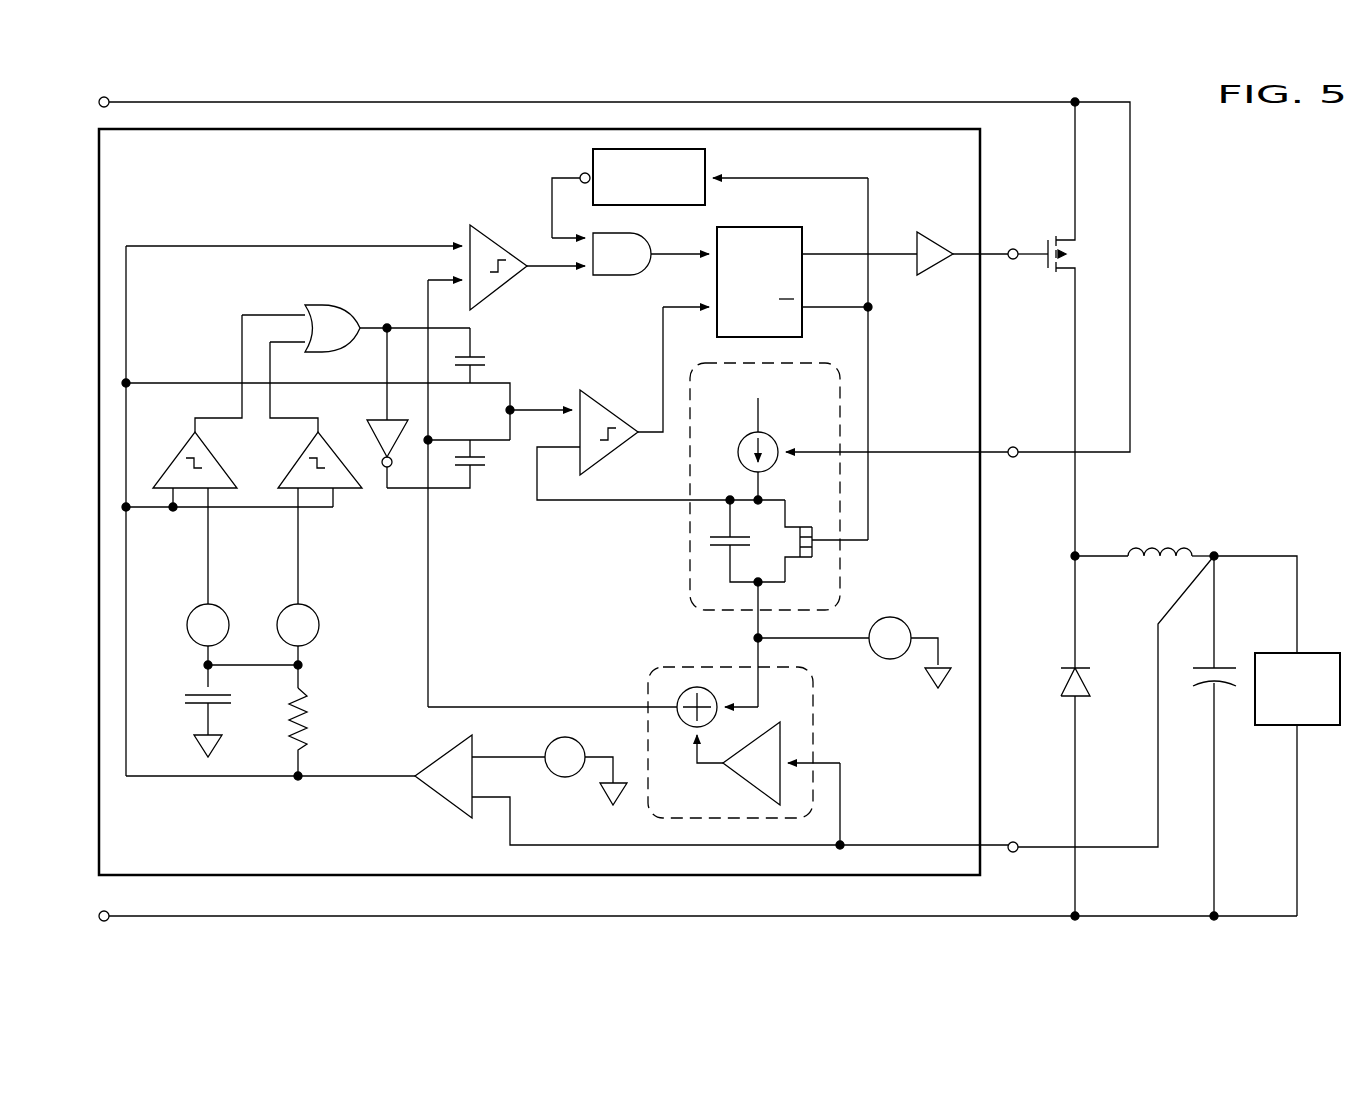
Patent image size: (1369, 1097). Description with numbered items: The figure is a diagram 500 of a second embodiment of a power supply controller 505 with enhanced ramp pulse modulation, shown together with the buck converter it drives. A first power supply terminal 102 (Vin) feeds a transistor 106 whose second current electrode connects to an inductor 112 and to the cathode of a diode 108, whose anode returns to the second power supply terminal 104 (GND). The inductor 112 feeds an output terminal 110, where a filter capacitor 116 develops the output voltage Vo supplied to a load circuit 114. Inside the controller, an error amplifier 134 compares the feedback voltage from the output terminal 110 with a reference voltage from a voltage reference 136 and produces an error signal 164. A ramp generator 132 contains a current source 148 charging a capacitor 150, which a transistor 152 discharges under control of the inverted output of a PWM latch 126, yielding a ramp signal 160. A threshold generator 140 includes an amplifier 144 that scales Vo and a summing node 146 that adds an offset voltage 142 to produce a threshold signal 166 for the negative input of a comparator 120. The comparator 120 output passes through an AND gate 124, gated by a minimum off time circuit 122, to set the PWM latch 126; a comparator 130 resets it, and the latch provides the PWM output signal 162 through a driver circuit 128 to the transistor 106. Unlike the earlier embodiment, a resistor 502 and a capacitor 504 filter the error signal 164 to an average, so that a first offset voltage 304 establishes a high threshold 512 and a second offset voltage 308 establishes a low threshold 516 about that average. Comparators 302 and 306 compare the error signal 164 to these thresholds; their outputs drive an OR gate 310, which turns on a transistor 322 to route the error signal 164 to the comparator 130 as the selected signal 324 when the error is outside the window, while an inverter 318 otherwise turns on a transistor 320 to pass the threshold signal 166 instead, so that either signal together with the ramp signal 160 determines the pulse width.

The first power supply terminal 102 is at (210, 100).
The second power supply terminal 104 is at (212, 913).
The transistor 106 is at (1066, 248).
The diode 108 is at (1078, 666).
The output terminal 110 is at (1262, 552).
The inductor 112 is at (1150, 534).
The load circuit 114 is at (1322, 653).
The filter capacitor 116 is at (1196, 662).
The comparator 120 is at (498, 238).
The minimum off time circuit 122 is at (708, 162).
The AND gate 124 is at (614, 280).
The PWM latch 126 is at (778, 227).
The driver circuit 128 is at (932, 236).
The comparator 130 is at (616, 406).
The ramp generator 132 is at (690, 556).
The error amplifier 134 is at (430, 756).
The voltage reference 136 is at (556, 777).
The threshold generator 140 is at (814, 730).
The offset voltage 142 is at (890, 659).
The amplifier 144 is at (782, 734).
The summing node 146 is at (680, 692).
The current source 148 is at (738, 452).
The capacitor 150 is at (722, 552).
The transistor 152 is at (816, 522).
The ramp signal 160 is at (650, 528).
The PWM output signal 162 is at (856, 283).
The error signal 164 is at (375, 803).
The threshold signal 166 is at (510, 697).
The comparator 302 is at (170, 466).
The first offset voltage 304 is at (196, 648).
The comparator 306 is at (294, 466).
The second offset voltage 308 is at (278, 626).
The OR gate 310 is at (360, 294).
The inverter 318 is at (372, 438).
The transistor 320 is at (478, 470).
The transistor 322 is at (474, 370).
The selected signal 324 is at (575, 403).
The diagram 500 is at (1230, 196).
The resistor 502 is at (312, 716).
The capacitor 504 is at (228, 710).
The power supply controller 505 is at (99, 302).
The high threshold 512 is at (203, 566).
The low threshold 516 is at (303, 566).